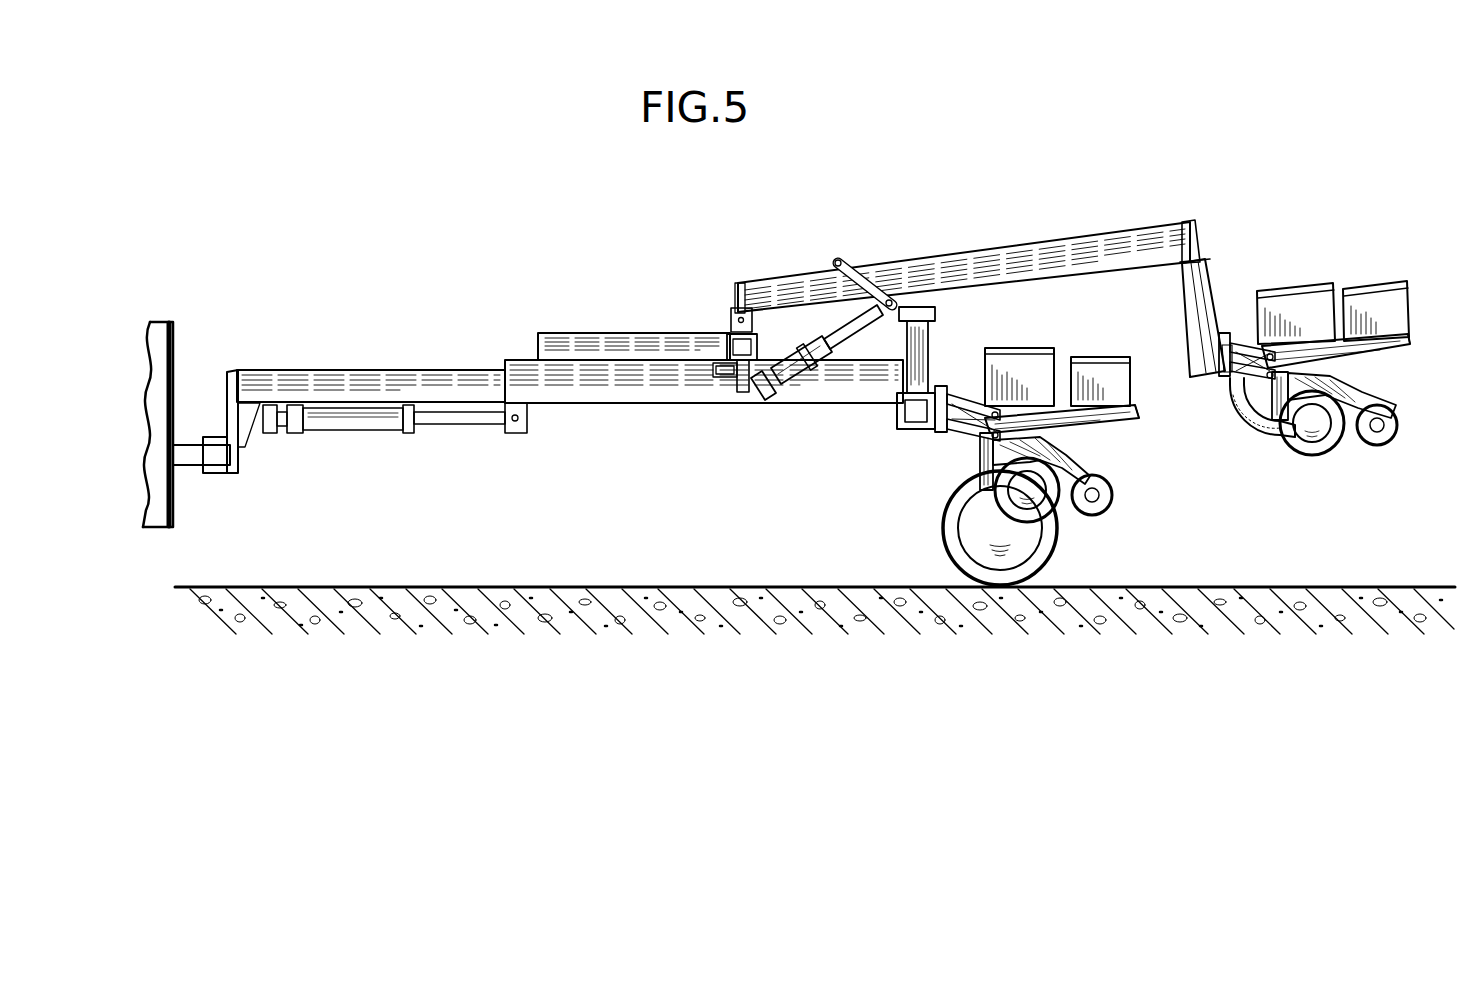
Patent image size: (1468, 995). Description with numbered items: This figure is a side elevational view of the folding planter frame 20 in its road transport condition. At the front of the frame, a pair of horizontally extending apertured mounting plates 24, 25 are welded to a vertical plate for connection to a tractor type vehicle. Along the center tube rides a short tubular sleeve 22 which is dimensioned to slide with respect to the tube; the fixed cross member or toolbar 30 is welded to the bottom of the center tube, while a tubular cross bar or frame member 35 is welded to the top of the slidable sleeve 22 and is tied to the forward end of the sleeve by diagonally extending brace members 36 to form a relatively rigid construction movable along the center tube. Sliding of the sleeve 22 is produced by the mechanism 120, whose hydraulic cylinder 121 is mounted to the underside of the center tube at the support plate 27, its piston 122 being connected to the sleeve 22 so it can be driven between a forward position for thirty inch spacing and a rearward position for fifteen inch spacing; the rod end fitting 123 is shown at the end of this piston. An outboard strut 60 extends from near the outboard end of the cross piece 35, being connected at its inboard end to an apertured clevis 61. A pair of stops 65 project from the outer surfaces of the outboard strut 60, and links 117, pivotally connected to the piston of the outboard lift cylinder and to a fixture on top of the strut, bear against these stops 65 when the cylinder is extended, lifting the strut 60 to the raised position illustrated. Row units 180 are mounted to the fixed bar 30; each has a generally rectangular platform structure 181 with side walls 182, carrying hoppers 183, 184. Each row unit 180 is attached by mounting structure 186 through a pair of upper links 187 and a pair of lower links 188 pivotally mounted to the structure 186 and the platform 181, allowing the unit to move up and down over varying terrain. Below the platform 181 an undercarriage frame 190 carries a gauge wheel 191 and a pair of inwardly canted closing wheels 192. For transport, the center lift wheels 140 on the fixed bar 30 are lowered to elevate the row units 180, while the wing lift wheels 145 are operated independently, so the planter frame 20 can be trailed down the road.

The folding planter frame 20 is at (1173, 142).
The sleeve 22 is at (656, 402).
The mounting plate 24 is at (212, 437).
The mounting plate 25 is at (213, 470).
The support plate 27 is at (246, 422).
The fixed cross member or toolbar 30 is at (896, 420).
The tubular frame member 35 is at (760, 340).
The brace member 36 is at (566, 342).
The outboard strut 60 is at (1033, 252).
The apertured clevis 61 is at (730, 316).
The stop 65 is at (886, 300).
The link 117 is at (838, 258).
The mechanism 120 is at (381, 442).
The hydraulic cylinder 121 is at (340, 420).
The piston 122 is at (460, 427).
The rod end block 123 is at (516, 435).
The lift wheel 140 is at (942, 534).
The lift wheel 145 is at (1268, 440).
The row unit 180 is at (1075, 340).
The platform structure 181 is at (1145, 410).
The side wall 182 is at (1090, 420).
The hopper 183 is at (1022, 350).
The hopper 184 is at (1105, 358).
The mounting structure 186 is at (925, 442).
The upper link 187 is at (955, 400).
The lower link 188 is at (963, 433).
The undercarriage frame 190 is at (1085, 462).
The gauge wheel 191 is at (1060, 507).
The closing wheel 192 is at (1106, 510).